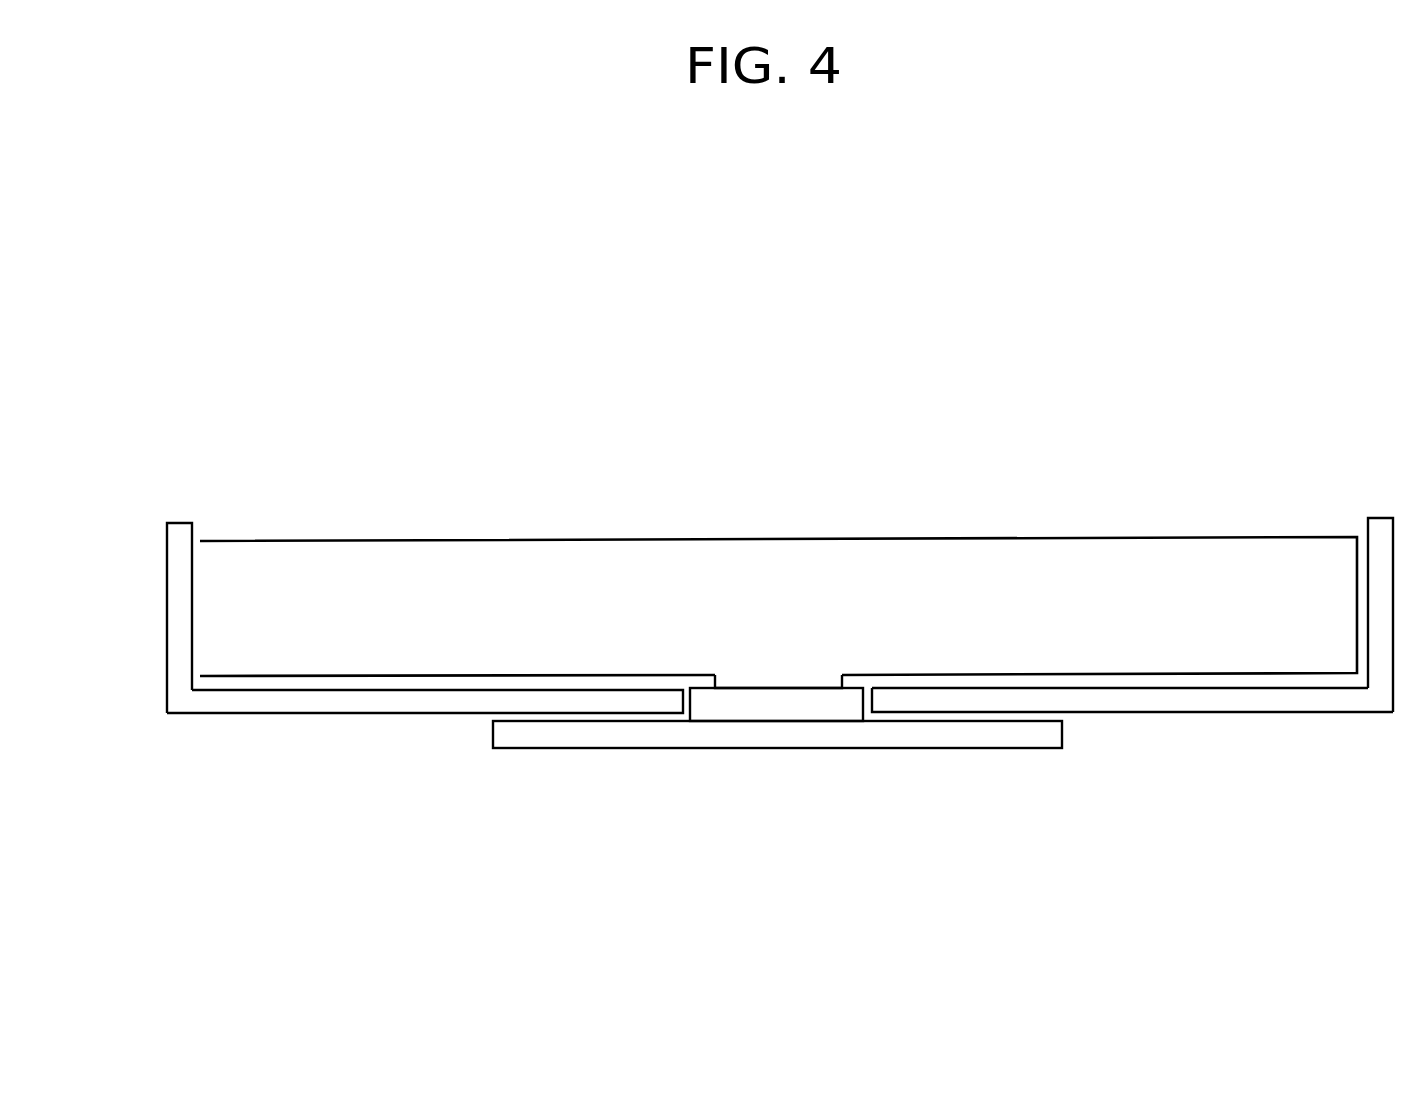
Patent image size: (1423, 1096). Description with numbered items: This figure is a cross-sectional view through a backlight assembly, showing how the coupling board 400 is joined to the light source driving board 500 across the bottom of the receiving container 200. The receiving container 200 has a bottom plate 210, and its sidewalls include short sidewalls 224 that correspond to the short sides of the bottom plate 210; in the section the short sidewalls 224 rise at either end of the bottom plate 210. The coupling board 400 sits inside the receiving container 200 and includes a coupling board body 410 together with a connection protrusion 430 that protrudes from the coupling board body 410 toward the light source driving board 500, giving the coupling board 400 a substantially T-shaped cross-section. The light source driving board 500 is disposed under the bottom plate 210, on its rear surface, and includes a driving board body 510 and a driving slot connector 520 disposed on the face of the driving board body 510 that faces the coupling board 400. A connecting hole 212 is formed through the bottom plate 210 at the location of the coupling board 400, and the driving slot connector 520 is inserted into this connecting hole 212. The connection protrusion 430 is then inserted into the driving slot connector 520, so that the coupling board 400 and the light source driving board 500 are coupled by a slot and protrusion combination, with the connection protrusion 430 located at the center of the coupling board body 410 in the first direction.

The receiving container 200 is at (730, 674).
The bottom plate 210 is at (352, 702).
The connecting hole 212 is at (876, 703).
The short sidewall 224 is at (172, 605).
The coupling board 400 is at (778, 558).
The coupling board body 410 is at (500, 570).
The connection protrusion 430 is at (781, 686).
The light source driving board 500 is at (777, 783).
The driving board body 510 is at (770, 827).
The driving slot connector 520 is at (753, 710).